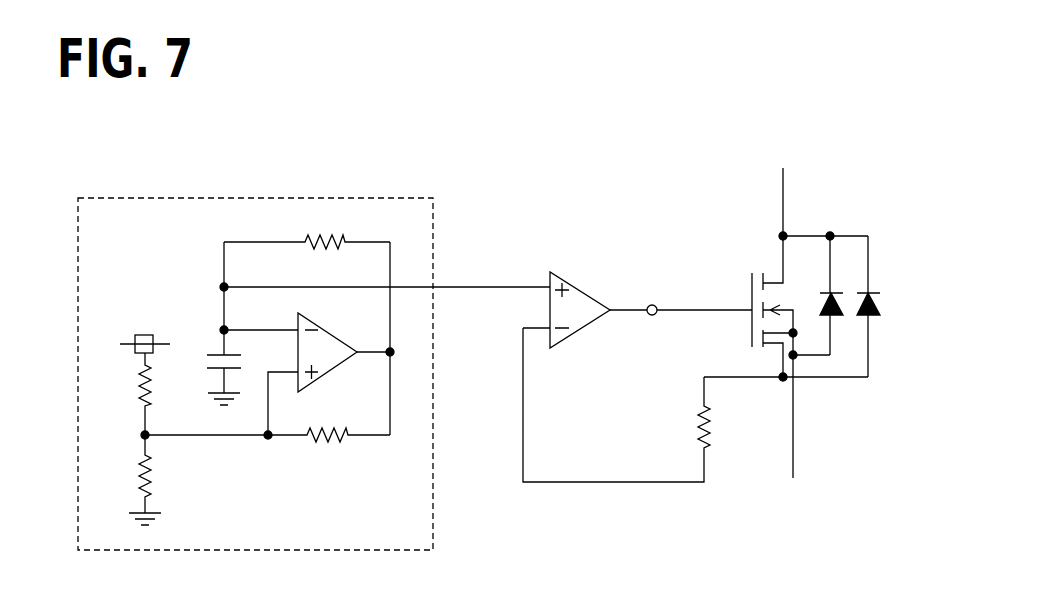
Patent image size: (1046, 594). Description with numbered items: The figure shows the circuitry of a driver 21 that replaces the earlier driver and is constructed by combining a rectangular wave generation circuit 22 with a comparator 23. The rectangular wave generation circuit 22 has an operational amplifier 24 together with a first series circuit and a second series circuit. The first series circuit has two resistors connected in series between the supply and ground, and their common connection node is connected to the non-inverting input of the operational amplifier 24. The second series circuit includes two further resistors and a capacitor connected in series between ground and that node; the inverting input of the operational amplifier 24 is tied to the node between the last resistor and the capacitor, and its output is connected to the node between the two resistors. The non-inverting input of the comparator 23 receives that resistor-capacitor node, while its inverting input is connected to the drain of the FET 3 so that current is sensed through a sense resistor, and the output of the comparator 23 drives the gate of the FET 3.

The driver 21 is at (457, 184).
The rectangular wave generation circuit 22 is at (268, 198).
The comparator 23 is at (582, 283).
The operational amplifier 24 is at (330, 327).
The N-channel MOSFET 3 is at (885, 304).